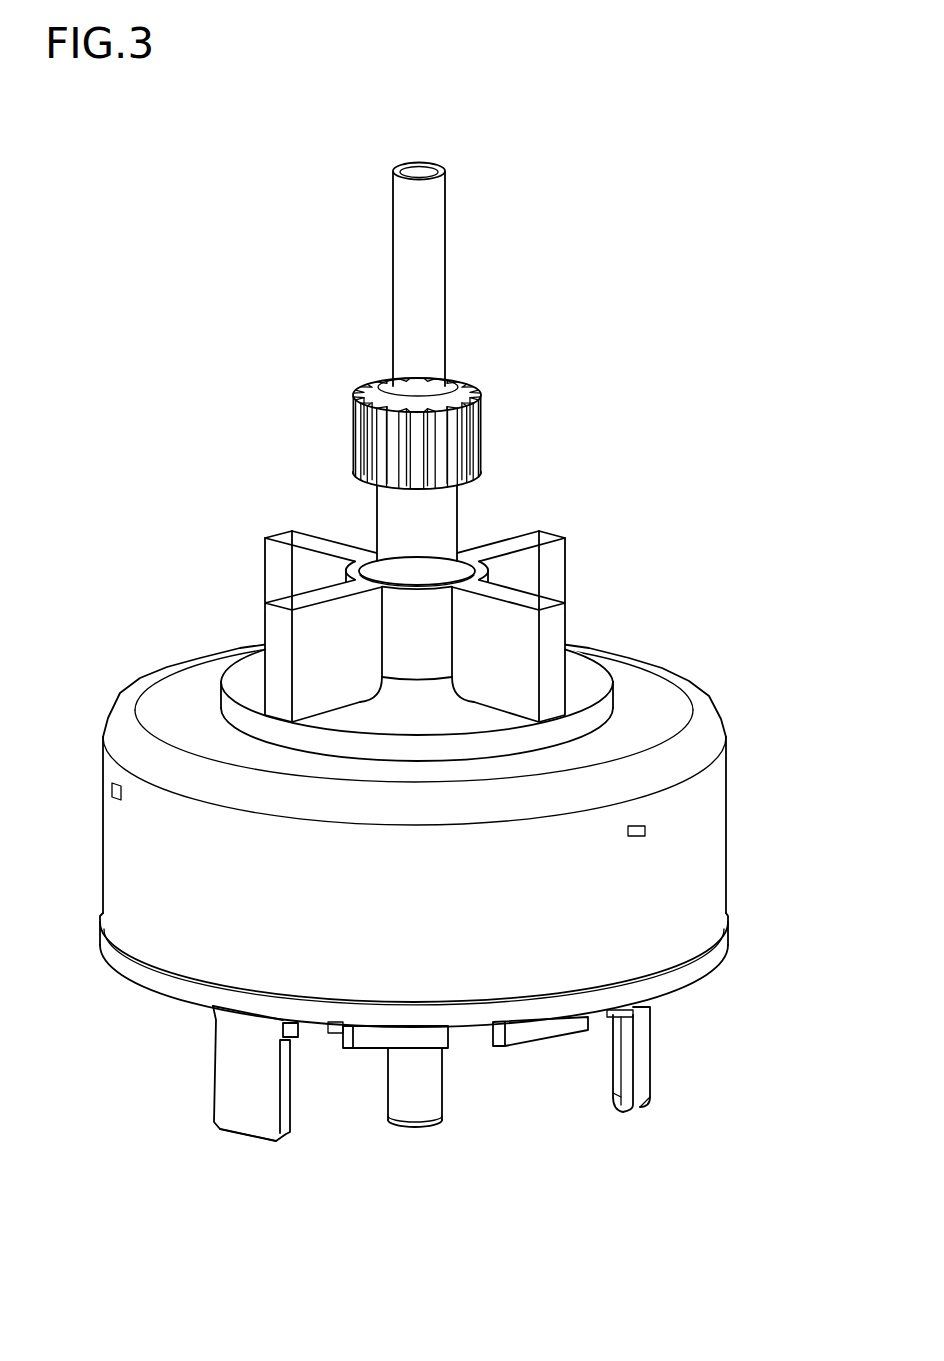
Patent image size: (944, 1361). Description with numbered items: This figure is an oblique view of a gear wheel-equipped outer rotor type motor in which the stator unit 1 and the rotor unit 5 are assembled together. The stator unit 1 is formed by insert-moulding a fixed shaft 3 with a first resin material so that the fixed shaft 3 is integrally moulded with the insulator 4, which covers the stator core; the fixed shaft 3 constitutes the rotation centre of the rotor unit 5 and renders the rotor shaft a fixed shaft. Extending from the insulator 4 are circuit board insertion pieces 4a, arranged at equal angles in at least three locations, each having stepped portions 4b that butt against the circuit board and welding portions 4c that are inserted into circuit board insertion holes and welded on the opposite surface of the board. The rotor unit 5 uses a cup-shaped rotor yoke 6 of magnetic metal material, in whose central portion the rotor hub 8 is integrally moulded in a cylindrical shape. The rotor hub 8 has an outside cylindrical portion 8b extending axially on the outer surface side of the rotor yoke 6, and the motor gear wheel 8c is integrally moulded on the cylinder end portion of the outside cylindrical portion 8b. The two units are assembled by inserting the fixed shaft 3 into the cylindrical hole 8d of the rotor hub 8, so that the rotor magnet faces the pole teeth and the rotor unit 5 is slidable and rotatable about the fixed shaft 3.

The stator unit 1 is at (452, 1127).
The fixed shaft 3 is at (440, 225).
The insulator 4 is at (523, 1047).
The circuit board insertion pieces 4a is at (293, 1230).
The stepped portions 4b is at (662, 1157).
The welding portions 4c is at (257, 1133).
The rotor unit 5 is at (257, 472).
The rotor yoke 6 is at (700, 690).
The rotor hub 8 is at (576, 651).
The outside cylindrical portion 8b is at (458, 523).
The motor gear wheel 8c is at (482, 424).
The cylindrical hole 8d is at (423, 384).